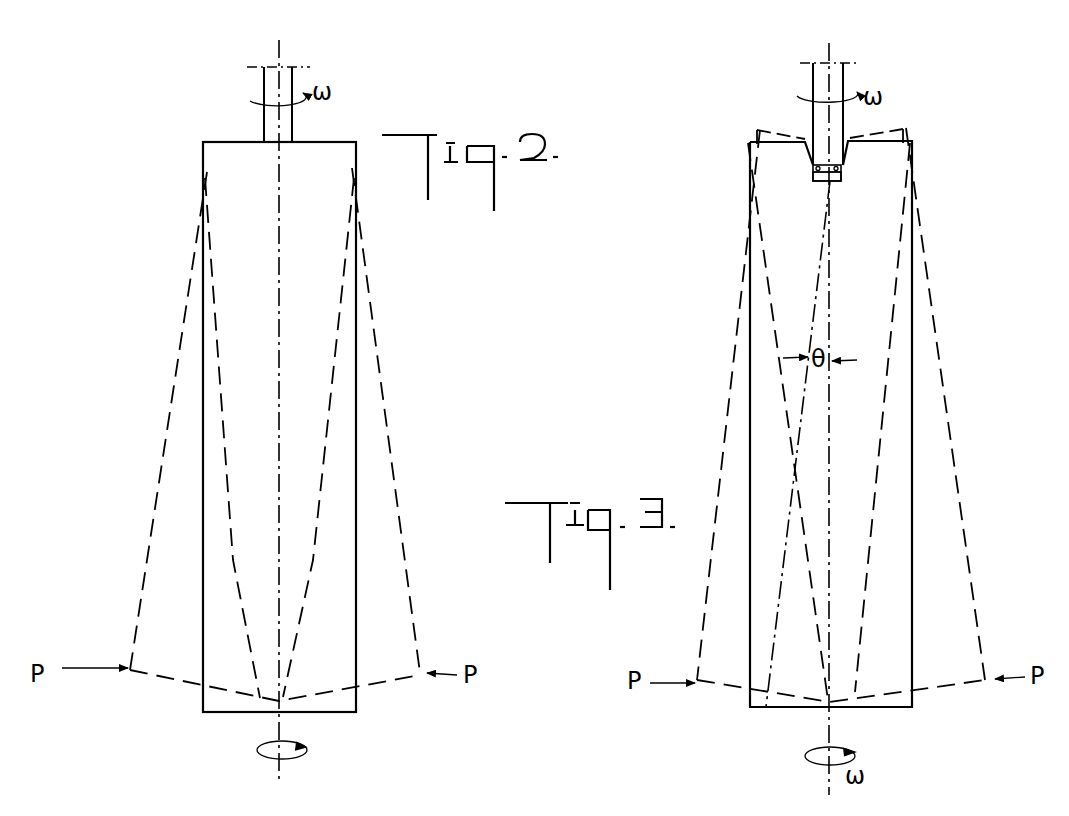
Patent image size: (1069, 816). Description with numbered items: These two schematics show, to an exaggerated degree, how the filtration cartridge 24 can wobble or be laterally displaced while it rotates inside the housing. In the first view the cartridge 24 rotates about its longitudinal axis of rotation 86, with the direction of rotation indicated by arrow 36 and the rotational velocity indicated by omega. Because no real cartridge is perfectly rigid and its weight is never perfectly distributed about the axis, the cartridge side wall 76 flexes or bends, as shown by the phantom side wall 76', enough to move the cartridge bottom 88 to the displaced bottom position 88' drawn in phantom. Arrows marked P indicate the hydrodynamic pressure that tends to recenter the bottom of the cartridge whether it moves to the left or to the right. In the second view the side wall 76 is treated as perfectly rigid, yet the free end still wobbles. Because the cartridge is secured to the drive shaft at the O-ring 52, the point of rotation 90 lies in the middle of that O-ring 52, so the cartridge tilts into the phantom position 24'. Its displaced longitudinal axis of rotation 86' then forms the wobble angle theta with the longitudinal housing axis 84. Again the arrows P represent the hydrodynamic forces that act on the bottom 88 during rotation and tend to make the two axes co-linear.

In FIG. 2, the cartridge 24 is at (249, 427).
In FIG. 3, the cartridge 24 is at (791, 414).
In FIG. 2, the arrow indicating direction of rotation 36 is at (252, 100).
In FIG. 2, the longitudinal axis of rotation 86 is at (257, 410).
In FIG. 2, the cartridge side wall 76 is at (180, 475).
In FIG. 3, the cartridge side wall 76 is at (710, 475).
In FIG. 2, the flexed cartridge side wall 76' is at (280, 433).
In FIG. 3, the flexed cartridge side wall 76' is at (781, 421).
In FIG. 2, the cartridge bottom 88 is at (252, 736).
In FIG. 3, the cartridge bottom 88 is at (819, 737).
In FIG. 2, the displaced cartridge bottom 88' is at (259, 694).
In FIG. 3, the displaced cartridge bottom 88' is at (819, 714).
In FIG. 3, the longitudinal housing axis 84 is at (829, 47).
In FIG. 3, the O-ring 52 is at (843, 168).
In FIG. 3, the point of rotation 90 is at (830, 178).
In FIG. 3, the wobbled cartridge 24' is at (824, 404).
In FIG. 3, the displaced longitudinal axis of rotation 86' is at (823, 444).